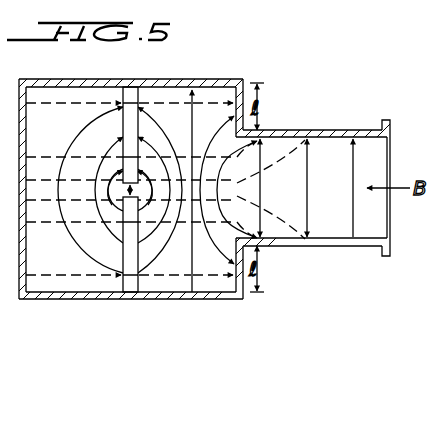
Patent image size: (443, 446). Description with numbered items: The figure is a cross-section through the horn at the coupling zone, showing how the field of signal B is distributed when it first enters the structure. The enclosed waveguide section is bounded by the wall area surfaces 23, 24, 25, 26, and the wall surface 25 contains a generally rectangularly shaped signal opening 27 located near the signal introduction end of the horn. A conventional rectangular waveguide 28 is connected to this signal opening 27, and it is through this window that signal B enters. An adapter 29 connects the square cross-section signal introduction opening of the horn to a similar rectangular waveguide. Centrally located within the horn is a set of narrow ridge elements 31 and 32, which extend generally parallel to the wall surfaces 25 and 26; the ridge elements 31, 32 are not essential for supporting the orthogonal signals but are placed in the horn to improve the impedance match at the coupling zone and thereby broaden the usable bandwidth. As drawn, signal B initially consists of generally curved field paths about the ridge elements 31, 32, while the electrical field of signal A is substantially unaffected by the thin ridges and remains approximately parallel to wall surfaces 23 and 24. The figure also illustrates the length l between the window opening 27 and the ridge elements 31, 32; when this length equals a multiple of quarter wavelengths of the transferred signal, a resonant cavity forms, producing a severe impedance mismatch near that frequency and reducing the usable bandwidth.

The wall area surface 23 is at (42, 79).
The wall area surface 24 is at (174, 293).
The wall surface 25 is at (241, 101).
The wall area surface 26 is at (19, 154).
The signal opening 27 is at (205, 111).
The rectangular waveguide 28 is at (297, 130).
The adapter 29 is at (221, 190).
The ridge element 31 is at (128, 292).
The ridge element 32 is at (131, 88).